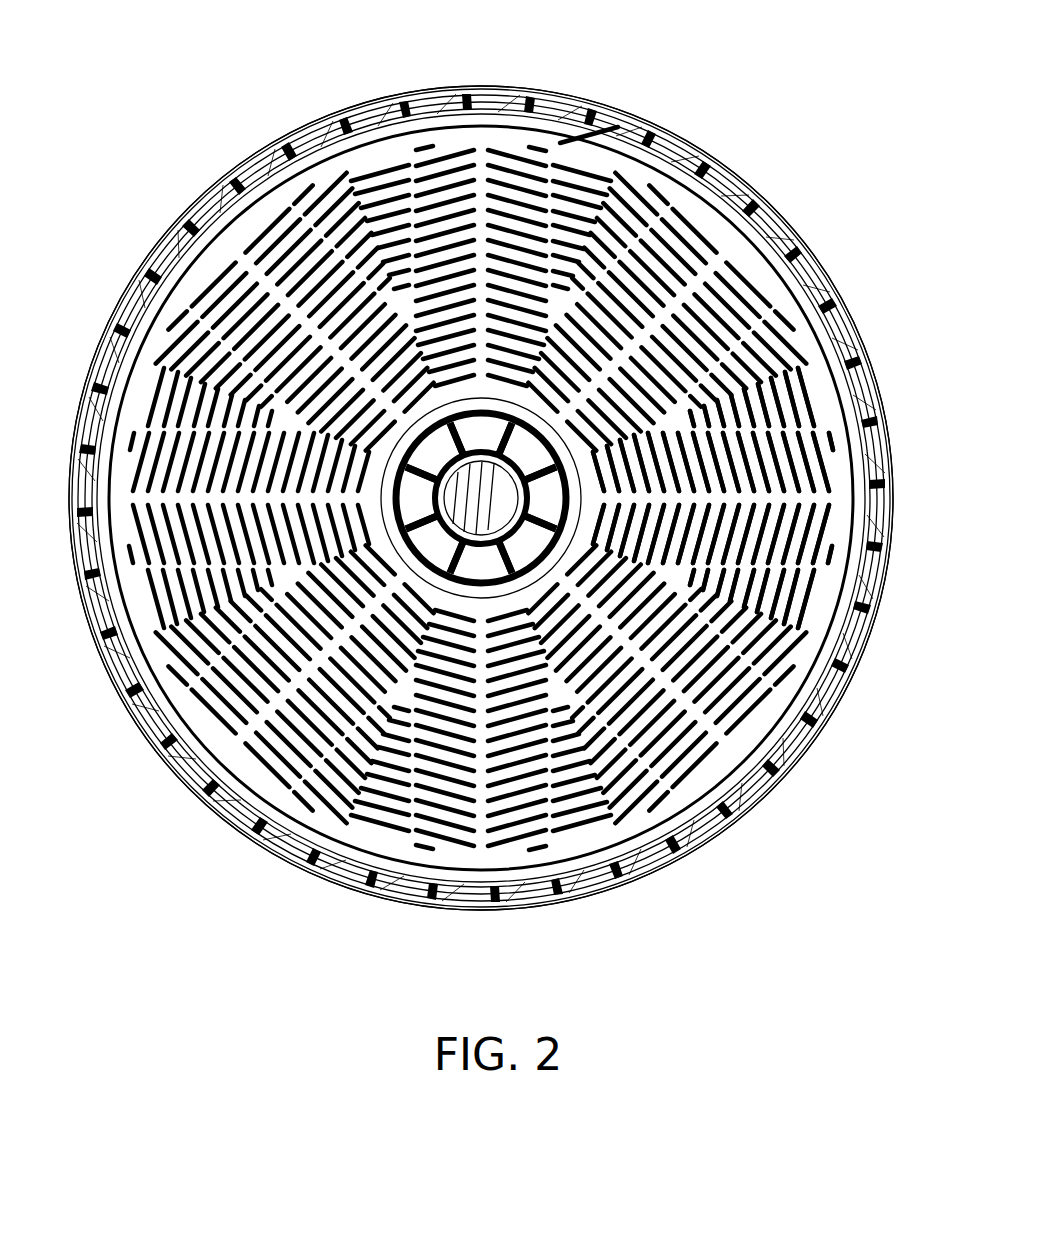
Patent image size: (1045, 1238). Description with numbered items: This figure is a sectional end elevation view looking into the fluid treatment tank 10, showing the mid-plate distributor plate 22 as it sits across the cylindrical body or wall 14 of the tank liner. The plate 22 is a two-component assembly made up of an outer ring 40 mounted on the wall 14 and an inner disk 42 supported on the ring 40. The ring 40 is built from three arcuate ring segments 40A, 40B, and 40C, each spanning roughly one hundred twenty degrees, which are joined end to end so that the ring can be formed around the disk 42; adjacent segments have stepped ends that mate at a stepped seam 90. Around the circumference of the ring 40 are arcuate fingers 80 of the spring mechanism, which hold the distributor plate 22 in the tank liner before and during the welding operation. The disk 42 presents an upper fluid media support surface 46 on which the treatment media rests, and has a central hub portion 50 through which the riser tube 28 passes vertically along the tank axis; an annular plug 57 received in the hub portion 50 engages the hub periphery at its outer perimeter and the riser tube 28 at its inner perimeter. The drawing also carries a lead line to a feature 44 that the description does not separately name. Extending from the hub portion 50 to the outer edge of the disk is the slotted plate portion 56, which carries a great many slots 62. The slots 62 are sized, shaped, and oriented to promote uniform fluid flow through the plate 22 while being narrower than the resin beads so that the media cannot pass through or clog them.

The tank 10 is at (757, 163).
The body or wall 14 is at (763, 197).
The mid-plate distributor plate 22 is at (582, 148).
The riser tube 28 is at (549, 679).
The outer ring 40 is at (770, 493).
The arcuate ring segment 40A is at (481, 208).
The arcuate ring segment 40B is at (649, 720).
The arcuate ring segment 40C is at (196, 524).
The inner disk 42 is at (770, 498).
The sector edge 44 is at (708, 337).
The upper fluid media support surface 46 is at (690, 659).
The central hub portion 50 is at (585, 500).
The slotted plate portion 56 is at (672, 498).
The annular plug 57 is at (678, 490).
The slots 62 is at (485, 480).
The fingers 80 is at (505, 105).
The stepped seam 90 is at (135, 300).